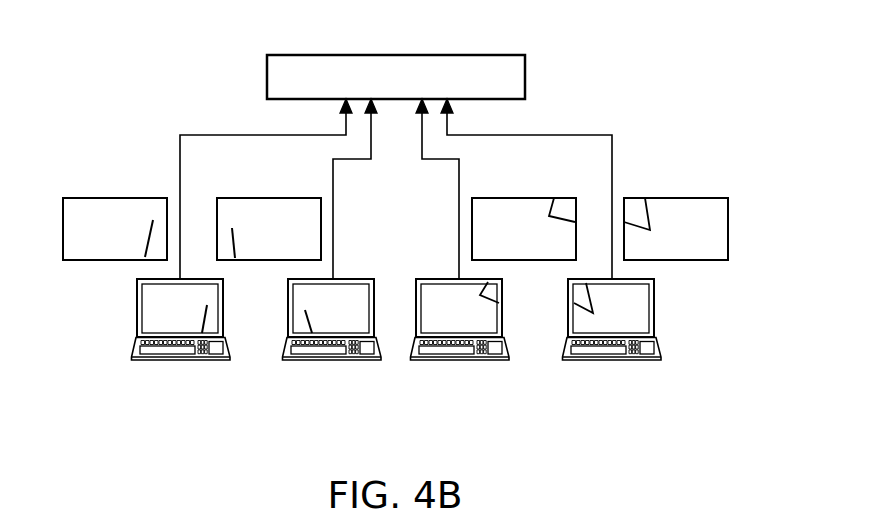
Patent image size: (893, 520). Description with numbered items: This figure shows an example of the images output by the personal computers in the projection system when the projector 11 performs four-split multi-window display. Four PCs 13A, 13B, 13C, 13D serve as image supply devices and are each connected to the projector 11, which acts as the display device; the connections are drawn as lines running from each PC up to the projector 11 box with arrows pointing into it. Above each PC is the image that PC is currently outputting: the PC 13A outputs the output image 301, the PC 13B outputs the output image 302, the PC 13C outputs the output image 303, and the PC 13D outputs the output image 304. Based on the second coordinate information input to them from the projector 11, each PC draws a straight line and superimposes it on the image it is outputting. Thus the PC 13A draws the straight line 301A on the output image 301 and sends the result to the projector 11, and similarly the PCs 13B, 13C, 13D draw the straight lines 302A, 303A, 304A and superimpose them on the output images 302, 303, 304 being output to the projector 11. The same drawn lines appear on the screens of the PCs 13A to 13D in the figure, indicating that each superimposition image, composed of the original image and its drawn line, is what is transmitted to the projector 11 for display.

The projector 11 is at (526, 75).
The output image 301 is at (115, 197).
The output image 302 is at (265, 197).
The output image 303 is at (527, 193).
The output image 304 is at (680, 194).
The straight line 301A is at (147, 243).
The straight line 302A is at (237, 245).
The straight line 303A is at (560, 220).
The straight line 304A is at (650, 230).
The PC 13A is at (182, 360).
The PC 13B is at (337, 360).
The PC 13C is at (465, 360).
The PC 13D is at (617, 360).